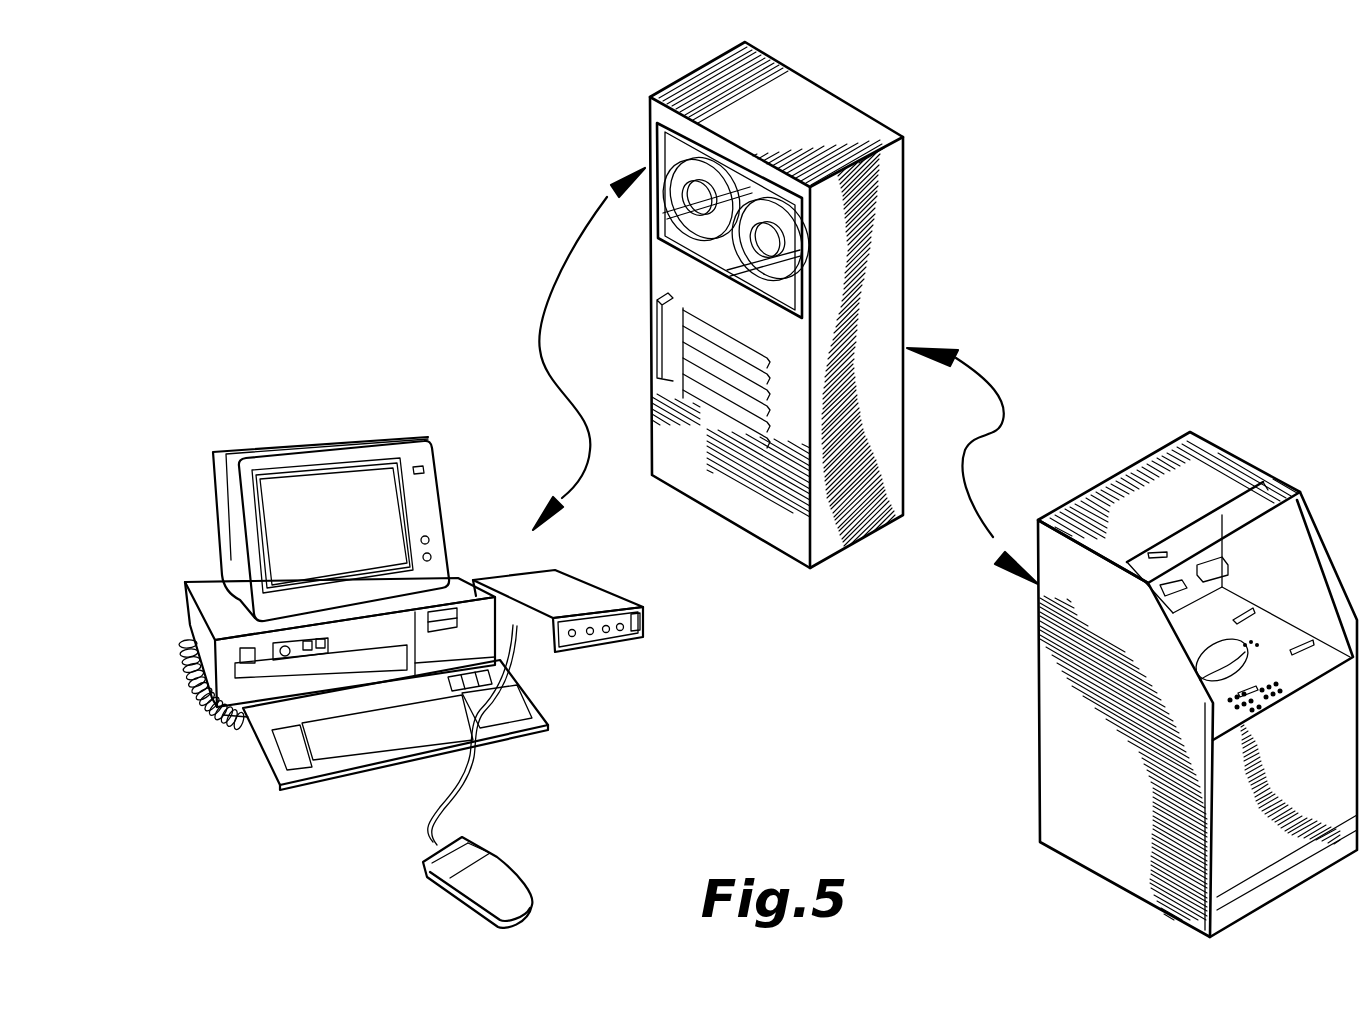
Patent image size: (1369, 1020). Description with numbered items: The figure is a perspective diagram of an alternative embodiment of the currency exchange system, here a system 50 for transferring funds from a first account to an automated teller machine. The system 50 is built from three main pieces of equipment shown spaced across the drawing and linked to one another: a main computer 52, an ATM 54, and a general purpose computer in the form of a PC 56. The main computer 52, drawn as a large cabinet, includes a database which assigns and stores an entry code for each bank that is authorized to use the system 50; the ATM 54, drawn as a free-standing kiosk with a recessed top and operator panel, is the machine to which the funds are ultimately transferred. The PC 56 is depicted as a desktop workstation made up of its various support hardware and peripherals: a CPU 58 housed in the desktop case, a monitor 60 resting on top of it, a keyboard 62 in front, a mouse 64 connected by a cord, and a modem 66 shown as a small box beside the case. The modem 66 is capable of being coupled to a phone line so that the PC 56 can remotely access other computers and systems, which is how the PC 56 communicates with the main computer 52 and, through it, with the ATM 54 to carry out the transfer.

The system 50 is at (1085, 255).
The main computer 52 is at (865, 542).
The ATM 54 is at (1038, 650).
The PC 56 is at (648, 755).
The CPU 58 is at (463, 582).
The monitor 60 is at (400, 435).
The keyboard 62 is at (552, 722).
The mouse 64 is at (497, 853).
The modem 66 is at (643, 600).